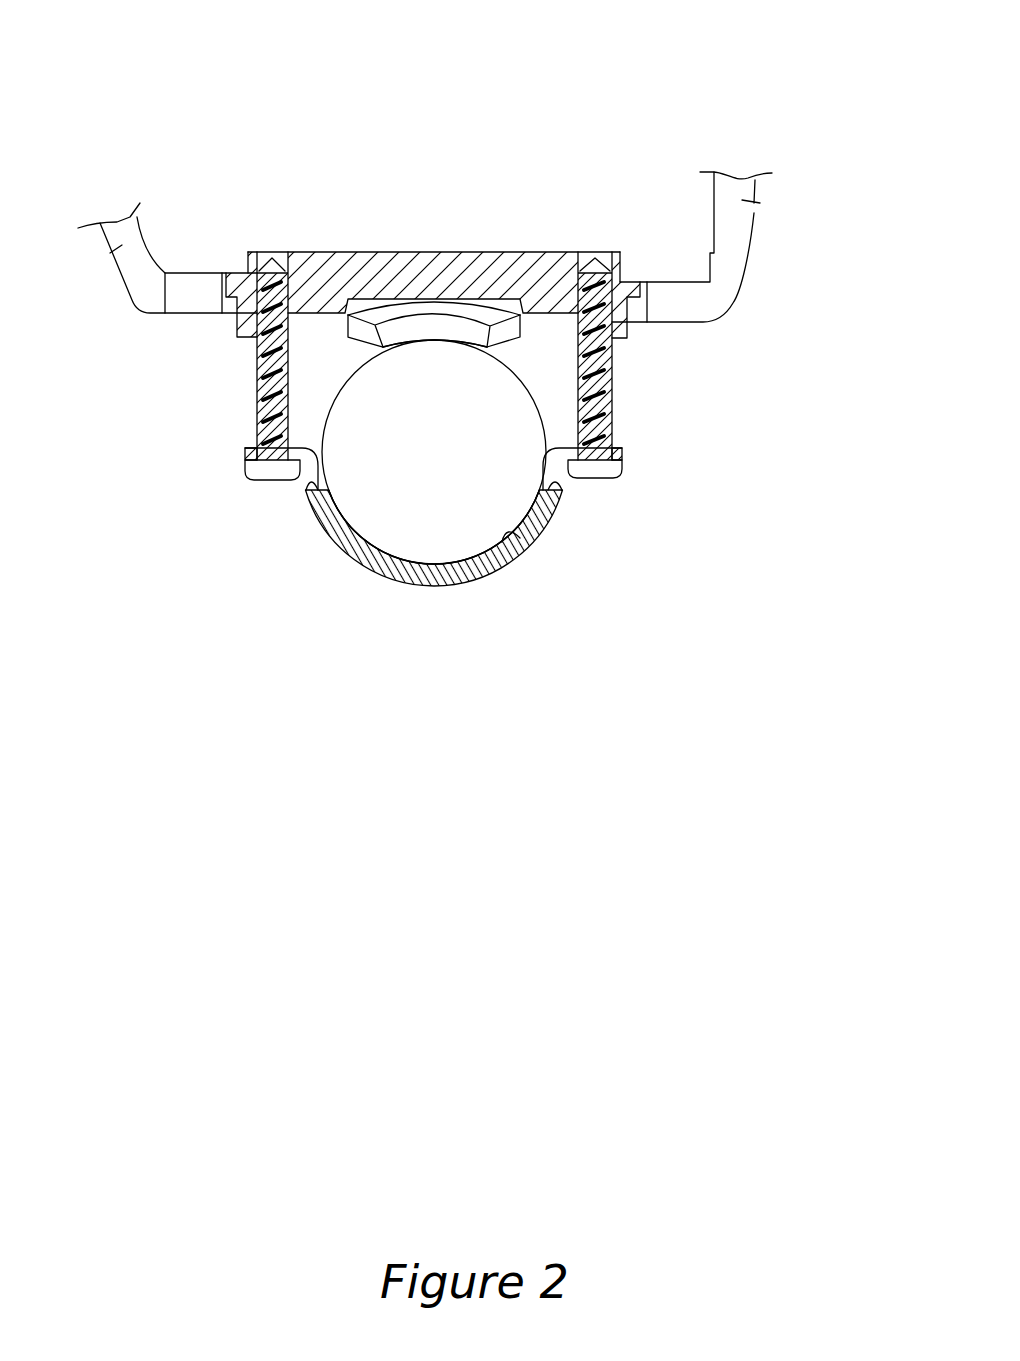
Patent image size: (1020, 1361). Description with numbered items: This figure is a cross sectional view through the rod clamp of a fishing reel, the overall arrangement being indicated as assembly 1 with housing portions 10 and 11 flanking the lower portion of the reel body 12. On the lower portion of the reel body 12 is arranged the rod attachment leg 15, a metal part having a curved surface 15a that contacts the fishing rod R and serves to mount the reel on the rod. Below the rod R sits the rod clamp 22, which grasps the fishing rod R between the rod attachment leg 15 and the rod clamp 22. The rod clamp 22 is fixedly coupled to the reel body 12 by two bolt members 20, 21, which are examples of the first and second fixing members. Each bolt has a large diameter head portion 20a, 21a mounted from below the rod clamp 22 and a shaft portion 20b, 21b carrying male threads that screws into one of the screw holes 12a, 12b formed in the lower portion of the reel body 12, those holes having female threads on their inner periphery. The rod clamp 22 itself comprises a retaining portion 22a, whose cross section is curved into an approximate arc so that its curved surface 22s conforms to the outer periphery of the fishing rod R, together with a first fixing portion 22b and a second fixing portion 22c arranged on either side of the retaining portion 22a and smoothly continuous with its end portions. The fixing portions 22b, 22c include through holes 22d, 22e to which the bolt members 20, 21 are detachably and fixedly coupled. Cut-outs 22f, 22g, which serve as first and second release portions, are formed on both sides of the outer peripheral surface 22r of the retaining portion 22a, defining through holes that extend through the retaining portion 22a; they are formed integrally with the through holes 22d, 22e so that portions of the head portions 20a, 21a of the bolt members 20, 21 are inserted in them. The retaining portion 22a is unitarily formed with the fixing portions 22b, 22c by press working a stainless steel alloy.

The pointing device assembly 1 is at (575, 115).
The left housing portion 10 is at (122, 245).
The right housing portion 11 is at (752, 210).
The reel body 12 is at (445, 228).
The screw hole 12a is at (265, 252).
The screw hole 12b is at (603, 252).
The rod attachment leg 15 is at (436, 246).
The curved surface 15a is at (413, 357).
The bolt member 20 is at (193, 430).
The head portion 20a is at (300, 470).
The shaft portion 20b is at (257, 360).
The bolt member 21 is at (643, 425).
The head portion 21a is at (583, 475).
The shaft portion 21b is at (612, 370).
The rod clamp 22 is at (429, 605).
The retaining portion 22a is at (488, 632).
The first fixing portion 22b is at (245, 452).
The second fixing portion 22c is at (620, 450).
The through hole 22d is at (258, 475).
The through hole 22e is at (620, 472).
The cut-out 22f is at (302, 490).
The cut-out 22g is at (555, 490).
The outer peripheral surface 22r is at (430, 585).
The curved surface 22s is at (520, 543).
The fishing rod R is at (463, 533).